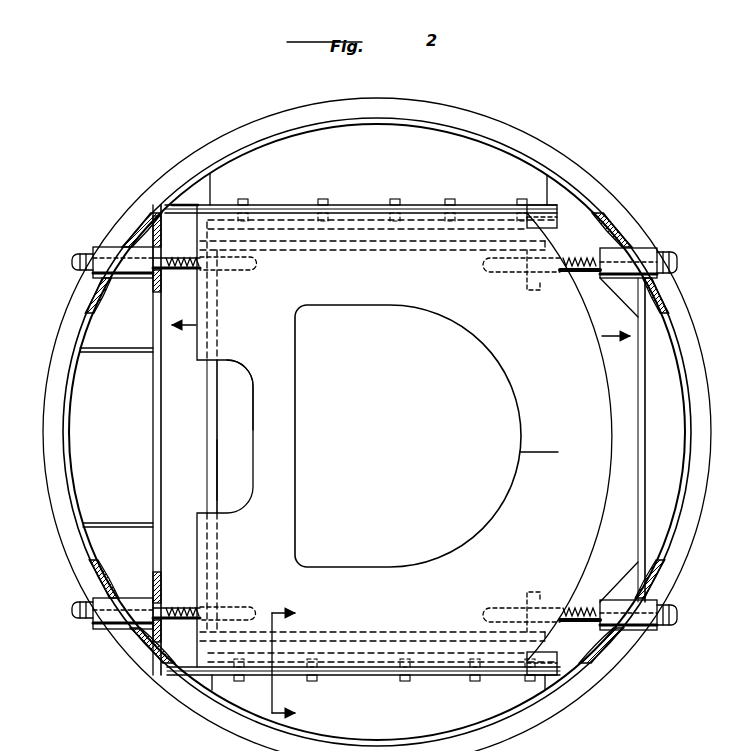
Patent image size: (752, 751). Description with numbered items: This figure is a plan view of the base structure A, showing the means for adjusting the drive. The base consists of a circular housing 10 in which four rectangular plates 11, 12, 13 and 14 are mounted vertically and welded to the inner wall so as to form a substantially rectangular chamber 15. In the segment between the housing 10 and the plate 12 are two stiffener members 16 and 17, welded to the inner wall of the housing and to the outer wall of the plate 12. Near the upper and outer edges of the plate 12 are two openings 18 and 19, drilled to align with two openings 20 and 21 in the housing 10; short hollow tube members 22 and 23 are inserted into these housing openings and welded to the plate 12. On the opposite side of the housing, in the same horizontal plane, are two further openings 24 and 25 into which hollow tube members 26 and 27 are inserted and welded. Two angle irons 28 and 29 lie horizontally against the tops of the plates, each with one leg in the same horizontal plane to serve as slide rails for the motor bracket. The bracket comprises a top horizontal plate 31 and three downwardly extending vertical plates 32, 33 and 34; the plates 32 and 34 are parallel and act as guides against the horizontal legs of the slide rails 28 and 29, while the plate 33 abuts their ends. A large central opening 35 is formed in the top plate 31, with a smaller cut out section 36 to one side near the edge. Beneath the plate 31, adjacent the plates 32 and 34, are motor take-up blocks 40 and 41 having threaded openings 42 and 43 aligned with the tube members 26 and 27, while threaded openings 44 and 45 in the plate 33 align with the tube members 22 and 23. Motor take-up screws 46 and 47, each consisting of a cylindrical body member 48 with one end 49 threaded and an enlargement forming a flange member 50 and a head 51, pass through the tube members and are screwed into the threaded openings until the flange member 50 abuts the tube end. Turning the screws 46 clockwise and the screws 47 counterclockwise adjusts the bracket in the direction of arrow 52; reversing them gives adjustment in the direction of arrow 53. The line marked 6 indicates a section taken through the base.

The circular housing 10 is at (272, 140).
The rectangular plate 11 is at (390, 676).
The rectangular plate 12 is at (152, 369).
The rectangular plate 13 is at (372, 205).
The rectangular plate 14 is at (643, 480).
The rectangular chamber 15 is at (246, 457).
The stiffener member 16 is at (130, 347).
The stiffener member 17 is at (140, 528).
The opening 18 is at (160, 274).
The opening 19 is at (162, 602).
The opening 20 is at (128, 230).
The opening 21 is at (124, 633).
The hollow tube member 22 is at (104, 246).
The hollow tube member 23 is at (118, 630).
The opening 24 is at (625, 250).
The opening 25 is at (628, 644).
The hollow tube member 26 is at (646, 252).
The hollow tube member 27 is at (636, 631).
The angle iron 28 is at (275, 226).
The angle iron 29 is at (350, 655).
The top horizontal plate 31 is at (545, 461).
The vertical plate 32 is at (445, 656).
The vertical plate 33 is at (212, 477).
The vertical plate 34 is at (462, 230).
The central opening 35 is at (448, 560).
The cut out section 36 is at (252, 430).
The motor take-up block 40 is at (527, 288).
The motor take-up block 41 is at (528, 596).
The threaded opening 42 is at (540, 274).
The threaded opening 43 is at (540, 600).
The threaded opening 44 is at (206, 270).
The threaded opening 45 is at (210, 608).
The motor take-up screw 46 is at (70, 276).
The motor take-up screw 47 is at (681, 277).
The cylindrical body member 48 is at (588, 258).
The threaded end 49 is at (186, 257).
The flange member 50 is at (95, 247).
The head 51 is at (72, 262).
The arrow 52 is at (190, 327).
The arrow 53 is at (605, 336).
The section line 6- 6 is at (293, 664).
The base structure A is at (56, 486).